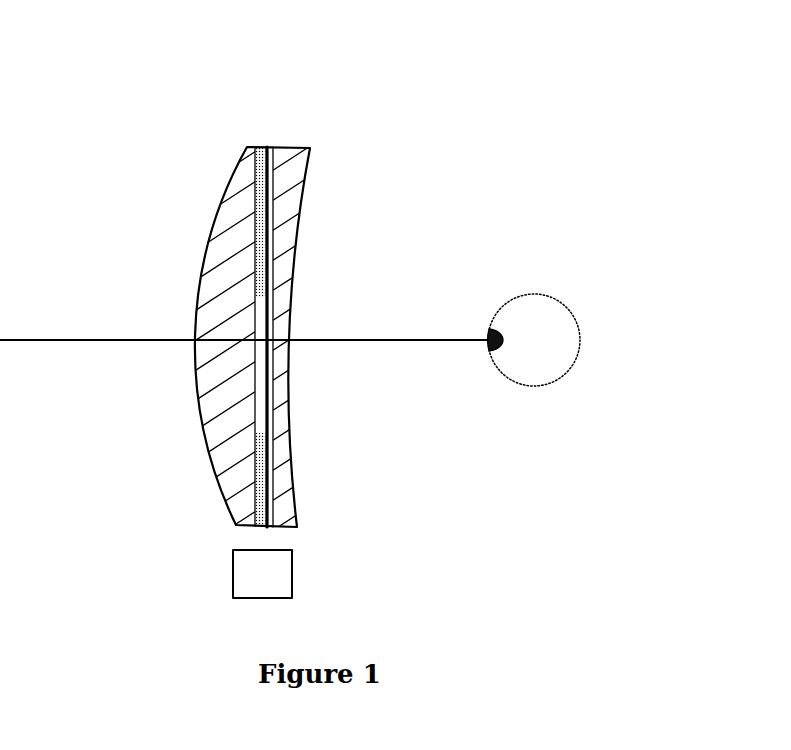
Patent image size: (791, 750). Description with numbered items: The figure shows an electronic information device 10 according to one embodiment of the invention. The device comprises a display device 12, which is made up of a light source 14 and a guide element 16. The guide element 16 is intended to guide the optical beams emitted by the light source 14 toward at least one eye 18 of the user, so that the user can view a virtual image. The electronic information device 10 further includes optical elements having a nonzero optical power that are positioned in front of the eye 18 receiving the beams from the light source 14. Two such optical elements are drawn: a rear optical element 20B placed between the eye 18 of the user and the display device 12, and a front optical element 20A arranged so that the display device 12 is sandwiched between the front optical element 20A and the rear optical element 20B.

The electronic information device 10 is at (415, 139).
The display device 12 is at (221, 539).
The light source 14 is at (253, 528).
The guide element 16 is at (262, 147).
The eye 18 is at (557, 353).
The front optical element 20A is at (212, 425).
The rear optical element 20B is at (283, 498).